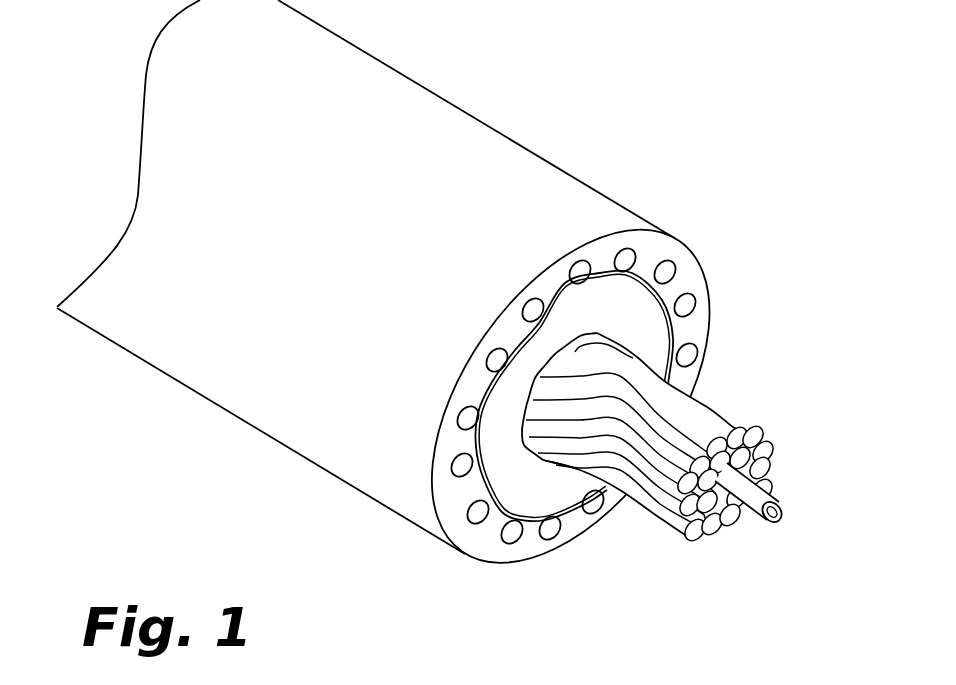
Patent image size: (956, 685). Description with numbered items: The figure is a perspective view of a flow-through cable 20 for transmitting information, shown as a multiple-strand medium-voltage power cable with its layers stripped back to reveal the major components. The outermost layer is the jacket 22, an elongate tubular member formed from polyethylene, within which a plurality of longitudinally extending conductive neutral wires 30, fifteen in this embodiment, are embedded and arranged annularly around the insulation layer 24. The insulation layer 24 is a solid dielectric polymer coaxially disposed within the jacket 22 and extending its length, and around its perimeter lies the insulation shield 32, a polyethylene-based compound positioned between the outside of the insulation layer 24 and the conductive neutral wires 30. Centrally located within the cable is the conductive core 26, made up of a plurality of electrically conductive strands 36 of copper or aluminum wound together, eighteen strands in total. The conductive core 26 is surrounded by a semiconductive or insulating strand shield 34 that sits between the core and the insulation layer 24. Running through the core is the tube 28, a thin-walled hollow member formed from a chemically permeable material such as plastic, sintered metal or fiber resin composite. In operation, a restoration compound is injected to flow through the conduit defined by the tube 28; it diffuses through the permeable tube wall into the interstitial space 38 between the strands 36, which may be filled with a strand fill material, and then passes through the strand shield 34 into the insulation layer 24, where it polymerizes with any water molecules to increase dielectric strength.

The cable 20 is at (618, 200).
The jacket 22 is at (427, 498).
The insulation layer 24 is at (658, 313).
The conductive core 26 is at (731, 409).
The tube 28 is at (770, 497).
The conductive neutral wires 30 is at (622, 260).
The insulation shield 32 is at (578, 505).
The strand shield 34 is at (535, 458).
The conductive strands 36 is at (734, 527).
The interstitial space 38 is at (712, 530).